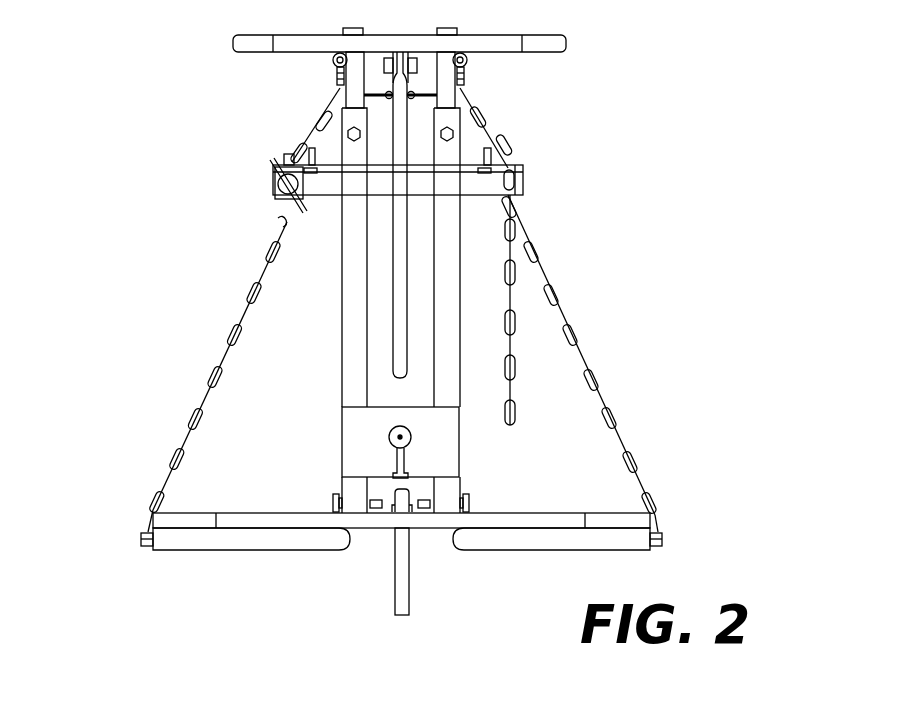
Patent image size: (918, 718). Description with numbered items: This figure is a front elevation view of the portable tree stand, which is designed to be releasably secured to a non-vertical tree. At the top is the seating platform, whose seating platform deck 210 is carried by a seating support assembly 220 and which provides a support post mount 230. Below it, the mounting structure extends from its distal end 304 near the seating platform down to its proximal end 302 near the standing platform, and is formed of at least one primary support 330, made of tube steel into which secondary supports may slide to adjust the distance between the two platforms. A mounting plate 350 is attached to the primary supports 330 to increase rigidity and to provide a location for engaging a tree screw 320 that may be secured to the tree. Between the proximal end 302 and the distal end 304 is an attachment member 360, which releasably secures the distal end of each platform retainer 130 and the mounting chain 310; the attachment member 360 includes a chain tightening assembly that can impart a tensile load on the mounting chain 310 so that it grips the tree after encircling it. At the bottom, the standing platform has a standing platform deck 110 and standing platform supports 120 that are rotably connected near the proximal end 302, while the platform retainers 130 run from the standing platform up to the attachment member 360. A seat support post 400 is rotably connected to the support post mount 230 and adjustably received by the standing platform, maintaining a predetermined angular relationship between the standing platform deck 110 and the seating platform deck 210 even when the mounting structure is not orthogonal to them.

The standing platform deck 110 is at (193, 513).
The standing platform support 120 is at (255, 550).
The platform retainer 130 is at (188, 420).
The seating platform deck 210 is at (567, 45).
The seating support assembly 220 is at (318, 66).
The support post mount 230 is at (417, 53).
The proximal end 302 is at (333, 512).
The distal end 304 is at (345, 34).
The mounting chain 310 is at (490, 112).
The tree screw 320 is at (412, 440).
The primary support 330 is at (342, 338).
The mounting plate 350 is at (378, 407).
The attachment member 360 is at (548, 170).
The seat support post 400 is at (393, 312).